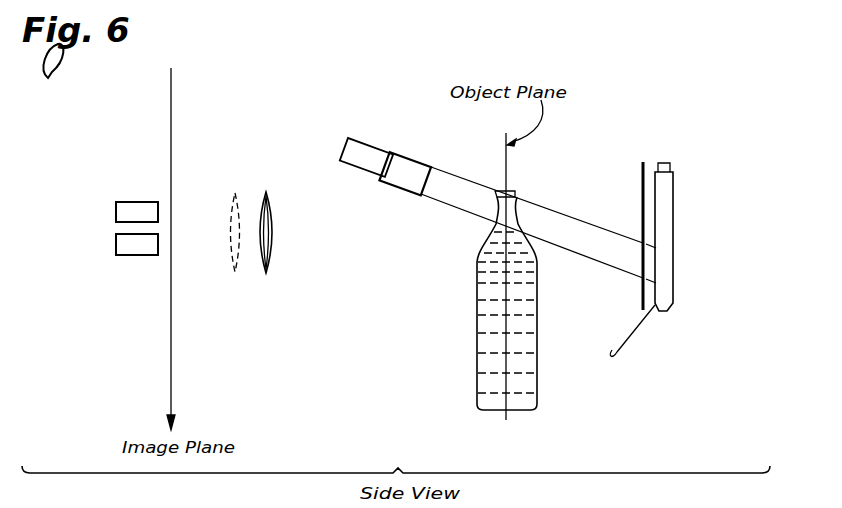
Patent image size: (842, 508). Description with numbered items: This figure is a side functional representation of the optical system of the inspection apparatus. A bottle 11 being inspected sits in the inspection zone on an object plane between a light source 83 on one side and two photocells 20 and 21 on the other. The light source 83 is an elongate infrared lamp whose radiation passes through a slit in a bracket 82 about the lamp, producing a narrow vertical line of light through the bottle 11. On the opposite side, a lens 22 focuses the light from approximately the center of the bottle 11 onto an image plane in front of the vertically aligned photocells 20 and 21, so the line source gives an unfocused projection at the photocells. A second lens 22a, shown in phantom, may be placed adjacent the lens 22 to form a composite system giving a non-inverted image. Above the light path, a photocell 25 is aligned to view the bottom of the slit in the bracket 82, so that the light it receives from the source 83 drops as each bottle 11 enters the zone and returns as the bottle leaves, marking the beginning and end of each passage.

The photocell 20 is at (142, 202).
The photocell 21 is at (147, 255).
The lens 22 is at (262, 190).
The second lens 22a is at (234, 271).
The photocell 25 is at (372, 168).
The bottle 11 is at (477, 333).
The bracket 82 is at (641, 176).
The source of radiation 83 is at (673, 274).